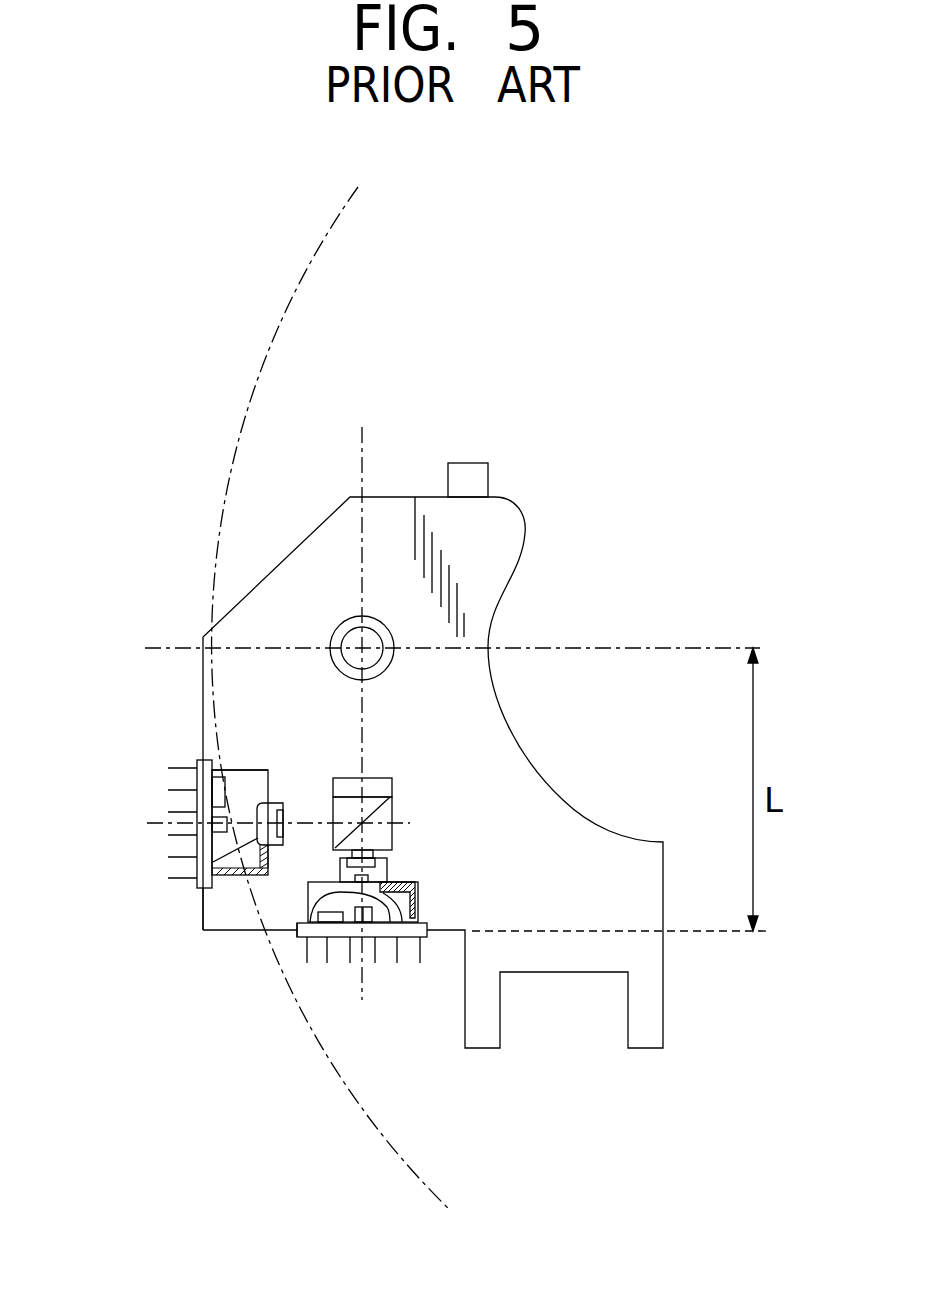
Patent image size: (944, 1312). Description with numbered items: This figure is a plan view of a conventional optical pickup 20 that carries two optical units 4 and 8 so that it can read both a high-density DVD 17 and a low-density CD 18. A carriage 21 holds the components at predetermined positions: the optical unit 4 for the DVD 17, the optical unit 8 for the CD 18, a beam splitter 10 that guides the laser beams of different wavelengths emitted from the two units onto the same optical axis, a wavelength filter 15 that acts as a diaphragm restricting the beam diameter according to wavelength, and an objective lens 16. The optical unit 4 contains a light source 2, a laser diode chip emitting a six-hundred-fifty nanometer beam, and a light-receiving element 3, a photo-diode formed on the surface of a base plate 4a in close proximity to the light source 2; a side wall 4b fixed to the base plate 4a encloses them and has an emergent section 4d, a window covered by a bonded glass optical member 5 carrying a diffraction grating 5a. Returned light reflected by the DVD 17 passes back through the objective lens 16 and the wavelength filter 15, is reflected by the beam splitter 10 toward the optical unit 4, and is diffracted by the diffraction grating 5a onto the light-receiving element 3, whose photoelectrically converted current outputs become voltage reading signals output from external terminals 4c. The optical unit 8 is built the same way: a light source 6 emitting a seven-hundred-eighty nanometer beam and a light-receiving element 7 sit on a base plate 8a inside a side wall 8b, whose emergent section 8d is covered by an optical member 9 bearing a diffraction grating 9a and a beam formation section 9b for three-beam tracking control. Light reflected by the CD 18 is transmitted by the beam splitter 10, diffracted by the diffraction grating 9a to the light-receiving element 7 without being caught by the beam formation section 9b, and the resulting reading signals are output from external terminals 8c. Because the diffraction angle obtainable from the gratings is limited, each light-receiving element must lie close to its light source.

The light source 2 is at (205, 828).
The light-receiving element 3 is at (195, 792).
The optical unit 4 is at (195, 864).
The base plate 4a is at (203, 908).
The side wall 4b is at (253, 770).
The external terminals 4c is at (176, 769).
The emergent section 4d is at (260, 843).
The optical member 5 is at (277, 878).
The diffraction grating 5a is at (205, 762).
The light source 6 is at (367, 891).
The light-receiving element 7 is at (338, 918).
The optical unit 8 is at (330, 937).
The base plate 8a is at (297, 934).
The side wall 8b is at (415, 903).
The external terminals 8c is at (423, 947).
The emergent section 8d is at (383, 893).
The optical member 9 is at (387, 866).
The diffraction grating 9a is at (387, 863).
The beam formation section 9b is at (418, 880).
The beam splitter 10 is at (392, 815).
The wavelength filter 15 is at (392, 784).
The objective lens 16 is at (393, 632).
The DVD 17 is at (268, 698).
The CD 18 is at (283, 435).
The optical pickup 20 is at (549, 473).
The carriage 21 is at (525, 534).